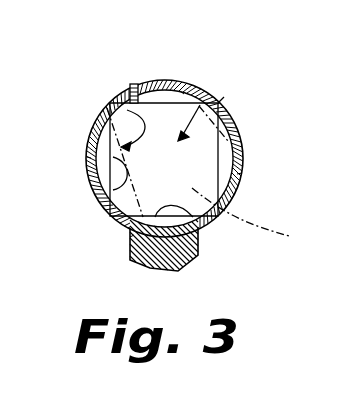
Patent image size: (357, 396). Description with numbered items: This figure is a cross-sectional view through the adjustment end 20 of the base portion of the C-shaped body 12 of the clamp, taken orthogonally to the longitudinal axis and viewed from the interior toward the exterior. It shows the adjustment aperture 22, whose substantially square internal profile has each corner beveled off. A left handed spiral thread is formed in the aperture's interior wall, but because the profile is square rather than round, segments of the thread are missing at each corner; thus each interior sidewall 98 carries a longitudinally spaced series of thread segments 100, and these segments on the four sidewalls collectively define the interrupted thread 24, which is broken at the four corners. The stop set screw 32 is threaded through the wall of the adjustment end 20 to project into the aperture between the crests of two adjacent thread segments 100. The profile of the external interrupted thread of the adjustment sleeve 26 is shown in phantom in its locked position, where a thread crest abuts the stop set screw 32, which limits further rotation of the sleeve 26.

The C-shaped body 12 is at (199, 252).
The adjustment end 20 is at (248, 124).
The adjustment aperture 22 is at (221, 100).
The interrupted thread 24 is at (109, 103).
The adjustment sleeve 26 is at (209, 178).
The stop set screw 32 is at (133, 84).
The interior sidewall 98 is at (148, 104).
The thread segments 100 is at (181, 91).